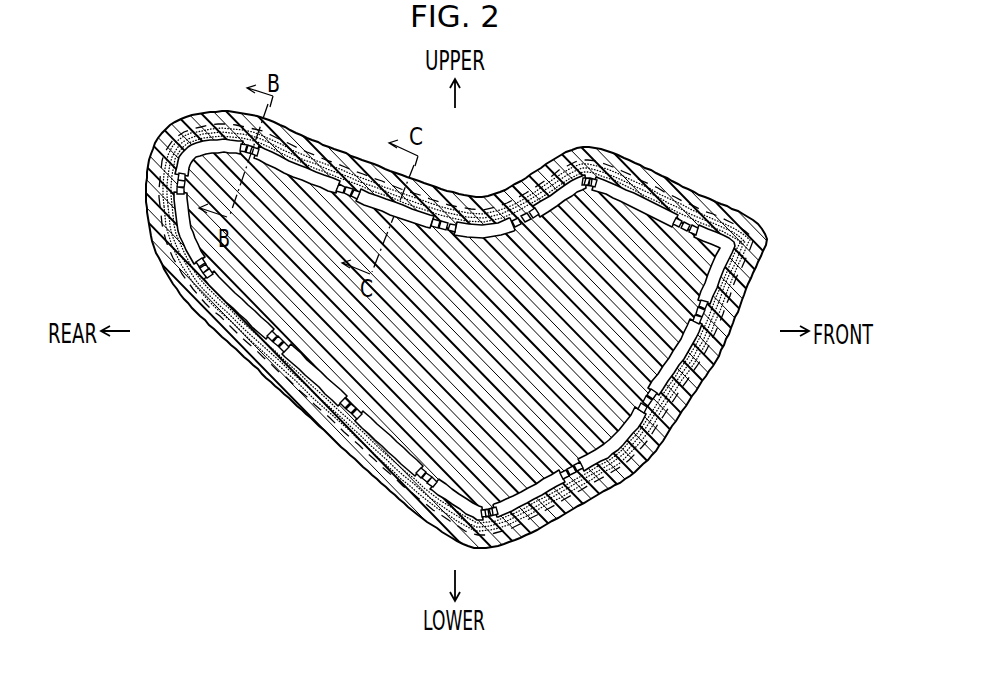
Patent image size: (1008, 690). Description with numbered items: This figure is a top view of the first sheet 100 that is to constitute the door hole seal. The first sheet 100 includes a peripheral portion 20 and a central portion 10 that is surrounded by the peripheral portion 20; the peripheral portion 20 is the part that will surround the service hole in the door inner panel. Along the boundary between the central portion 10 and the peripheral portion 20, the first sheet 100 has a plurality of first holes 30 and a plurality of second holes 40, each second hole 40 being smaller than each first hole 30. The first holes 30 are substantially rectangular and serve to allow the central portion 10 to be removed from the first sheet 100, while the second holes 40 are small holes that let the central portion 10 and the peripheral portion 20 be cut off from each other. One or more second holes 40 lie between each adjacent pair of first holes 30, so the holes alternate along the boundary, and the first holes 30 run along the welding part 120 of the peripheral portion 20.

The central portion 10 is at (592, 253).
The peripheral portion 20 is at (715, 210).
The first holes 30 is at (303, 168).
The second holes 40 is at (355, 193).
The first sheet 100 is at (708, 104).
The welding part 120 is at (682, 386).